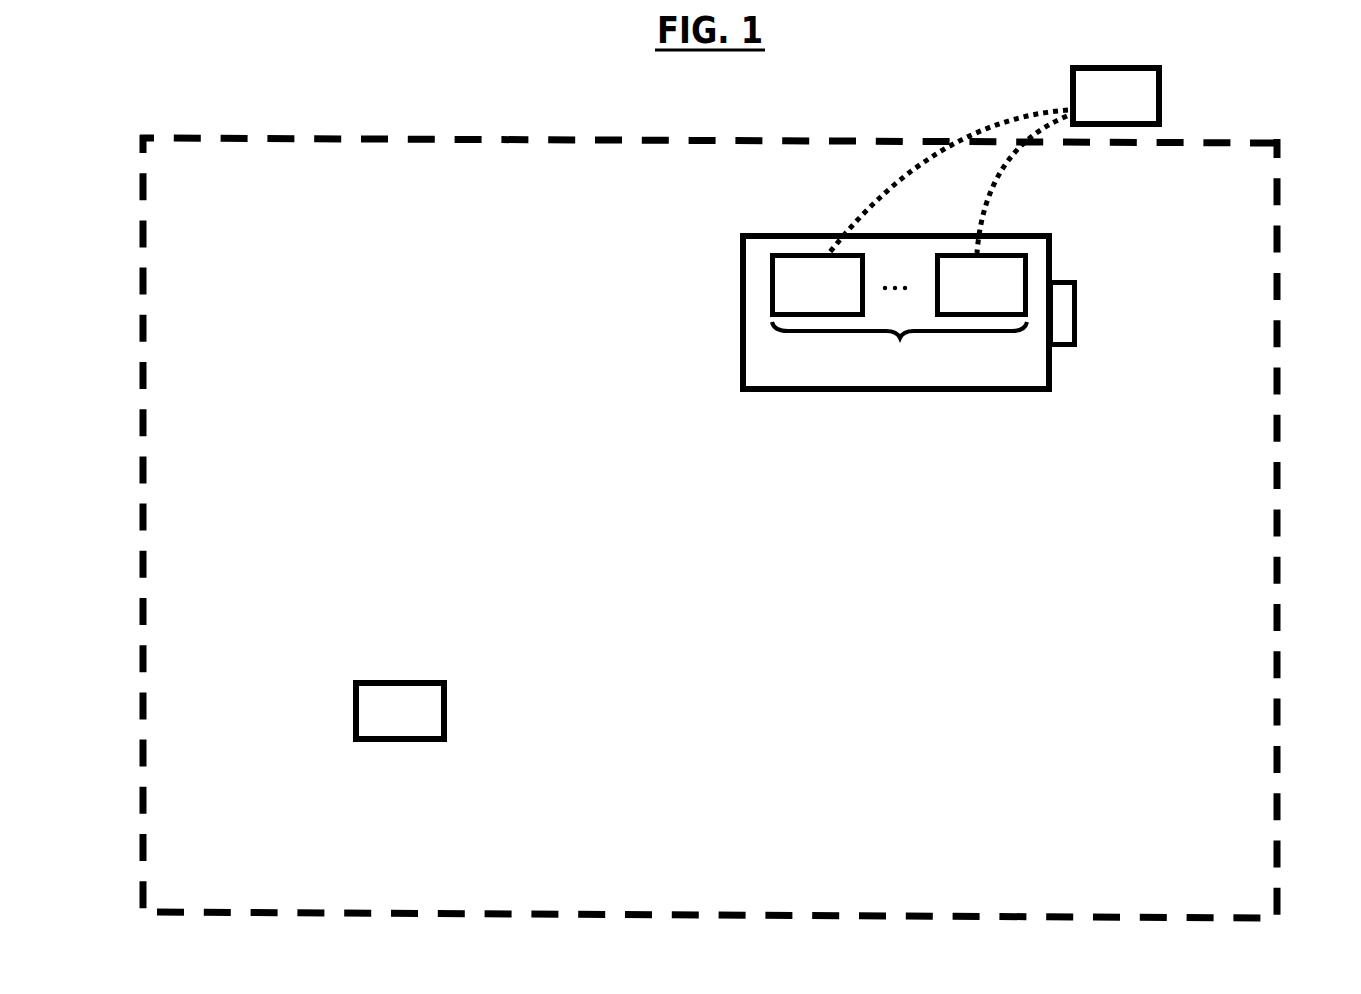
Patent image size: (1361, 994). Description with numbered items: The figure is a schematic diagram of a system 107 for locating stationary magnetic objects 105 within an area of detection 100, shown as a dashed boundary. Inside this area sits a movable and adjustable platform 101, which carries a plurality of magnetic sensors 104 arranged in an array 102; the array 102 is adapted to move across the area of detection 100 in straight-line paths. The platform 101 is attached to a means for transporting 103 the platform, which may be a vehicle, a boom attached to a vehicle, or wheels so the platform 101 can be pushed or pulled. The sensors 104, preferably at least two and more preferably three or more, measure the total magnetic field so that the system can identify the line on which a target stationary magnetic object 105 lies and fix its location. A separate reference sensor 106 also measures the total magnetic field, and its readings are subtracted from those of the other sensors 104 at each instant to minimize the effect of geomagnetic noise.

The area of detection 100 is at (1280, 518).
The movable and adjustable platform 101 is at (1052, 370).
The array 102 is at (899, 332).
The means for transporting the adjustable platform 103 is at (1077, 312).
The magnetic sensors 104 is at (840, 300).
The stationary magnetic object 105 is at (378, 725).
The reference sensor 106 is at (1095, 110).
The system 107 is at (798, 206).